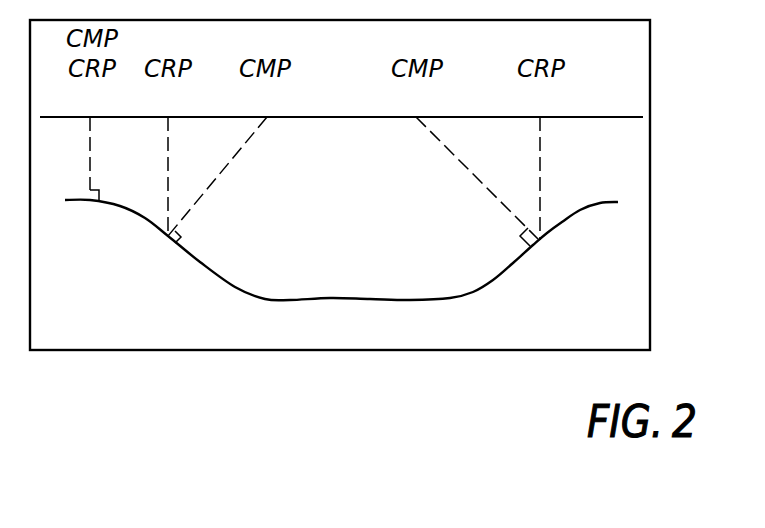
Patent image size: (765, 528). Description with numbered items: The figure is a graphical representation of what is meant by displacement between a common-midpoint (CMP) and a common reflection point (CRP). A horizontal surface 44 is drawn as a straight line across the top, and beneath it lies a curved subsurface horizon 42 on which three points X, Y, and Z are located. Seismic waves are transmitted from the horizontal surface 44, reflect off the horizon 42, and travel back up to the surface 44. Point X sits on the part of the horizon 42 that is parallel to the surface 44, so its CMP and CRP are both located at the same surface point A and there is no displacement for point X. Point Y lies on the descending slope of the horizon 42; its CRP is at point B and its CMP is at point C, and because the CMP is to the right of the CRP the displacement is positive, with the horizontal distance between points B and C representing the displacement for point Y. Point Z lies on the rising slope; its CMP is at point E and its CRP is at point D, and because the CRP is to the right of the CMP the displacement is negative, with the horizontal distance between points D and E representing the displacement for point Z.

The horizontal surface 44 is at (603, 117).
The subsurface horizon 42 is at (593, 203).
The point A is at (89, 139).
The point B is at (168, 162).
The point C is at (221, 162).
The point D is at (540, 164).
The point E is at (473, 163).
The point X is at (89, 213).
The point Y is at (165, 250).
The point Z is at (541, 248).